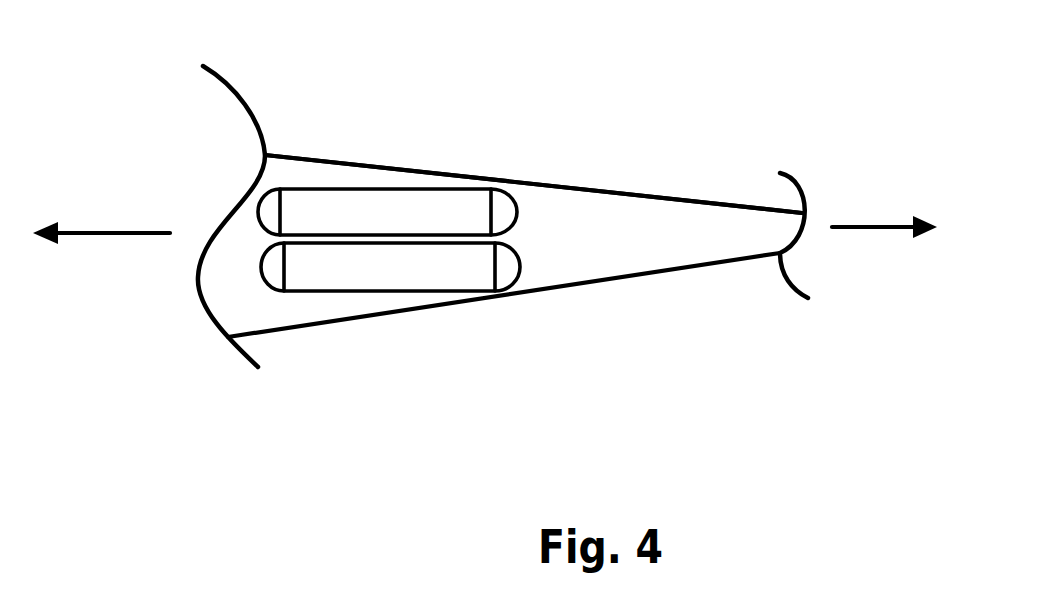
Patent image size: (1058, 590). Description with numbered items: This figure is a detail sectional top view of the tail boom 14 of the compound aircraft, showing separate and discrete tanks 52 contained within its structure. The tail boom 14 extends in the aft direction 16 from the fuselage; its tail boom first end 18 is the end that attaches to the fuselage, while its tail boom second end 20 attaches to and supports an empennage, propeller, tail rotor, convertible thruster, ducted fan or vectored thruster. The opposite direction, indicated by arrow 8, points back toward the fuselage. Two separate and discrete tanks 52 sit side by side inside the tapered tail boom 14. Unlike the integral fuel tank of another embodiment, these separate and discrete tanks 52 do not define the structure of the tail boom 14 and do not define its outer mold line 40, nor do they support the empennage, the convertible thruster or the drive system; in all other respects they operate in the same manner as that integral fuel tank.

The first (proximal) direction 8 is at (111, 233).
The tail boom 14 is at (582, 187).
The aft direction 16 is at (873, 226).
The tail boom first end 18 is at (223, 259).
The tail boom second end 20 is at (755, 223).
The outer mold line (OML) 40 is at (655, 195).
The separate and discrete tanks 52 is at (407, 205).